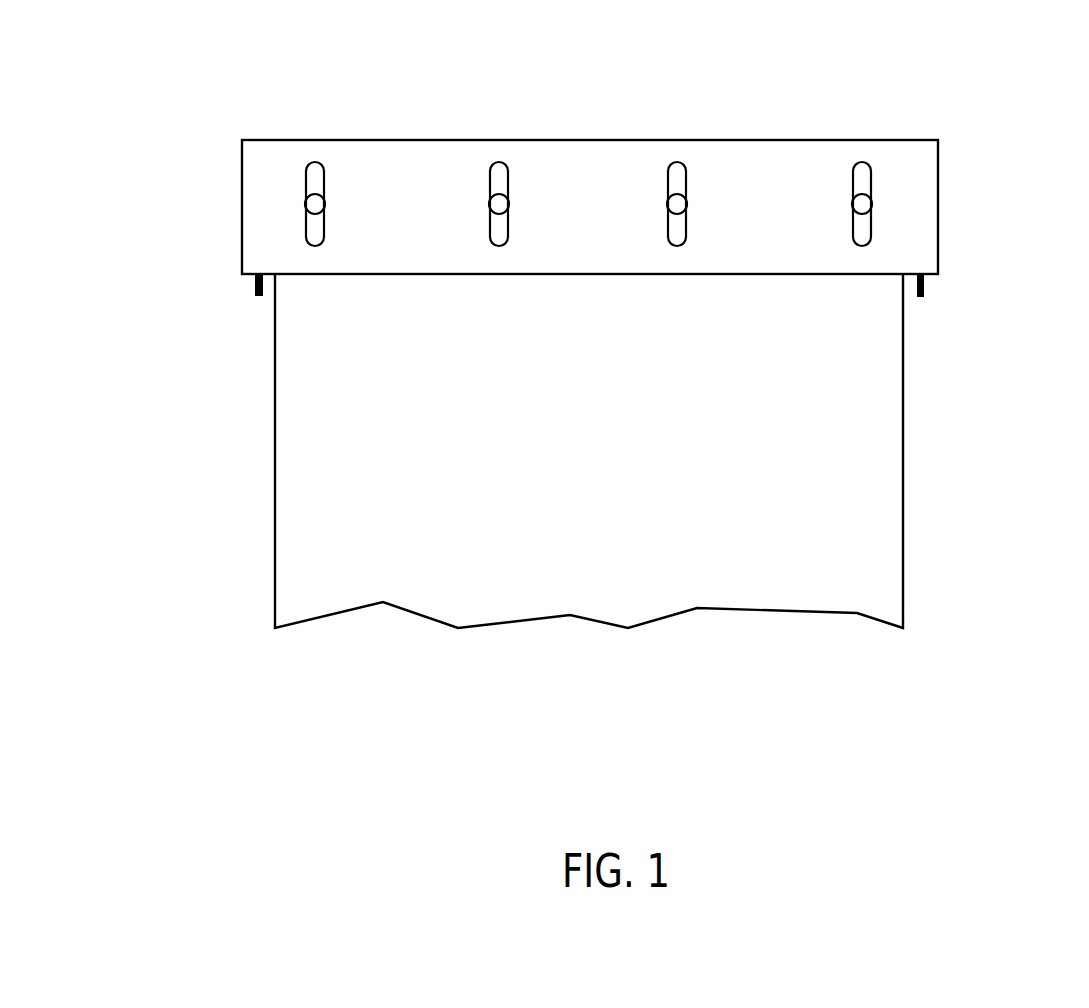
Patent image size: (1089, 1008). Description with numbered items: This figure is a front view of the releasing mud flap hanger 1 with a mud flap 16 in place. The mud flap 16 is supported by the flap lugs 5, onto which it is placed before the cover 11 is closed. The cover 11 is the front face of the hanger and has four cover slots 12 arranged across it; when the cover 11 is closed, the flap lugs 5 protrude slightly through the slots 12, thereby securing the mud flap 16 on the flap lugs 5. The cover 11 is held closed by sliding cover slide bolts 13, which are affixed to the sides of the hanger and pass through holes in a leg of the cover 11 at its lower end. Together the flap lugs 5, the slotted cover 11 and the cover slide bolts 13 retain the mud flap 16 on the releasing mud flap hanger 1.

The releasing mud flap hanger 1 is at (964, 140).
The cover 11 is at (567, 160).
The cover slots 12 is at (310, 178).
The flap lugs 5 is at (316, 208).
The cover slide bolts 13 is at (254, 289).
The mud flap 16 is at (904, 563).